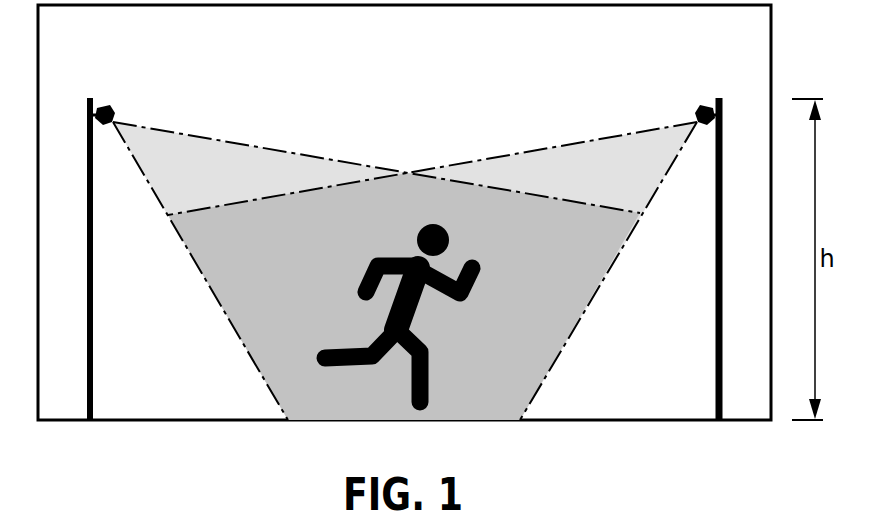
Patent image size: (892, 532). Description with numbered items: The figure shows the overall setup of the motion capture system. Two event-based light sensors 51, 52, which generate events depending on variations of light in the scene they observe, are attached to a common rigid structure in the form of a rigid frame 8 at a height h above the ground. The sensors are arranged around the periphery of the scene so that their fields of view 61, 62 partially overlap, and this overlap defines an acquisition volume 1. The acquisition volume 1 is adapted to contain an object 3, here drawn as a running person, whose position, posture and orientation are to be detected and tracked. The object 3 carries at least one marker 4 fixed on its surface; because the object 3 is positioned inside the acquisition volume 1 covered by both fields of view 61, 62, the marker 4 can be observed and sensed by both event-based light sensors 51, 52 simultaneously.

The acquisition volume 1 is at (516, 338).
The object 3 is at (425, 225).
The marker 4 is at (478, 272).
The rigid frame 8 is at (93, 357).
The event-based light sensor 51 is at (103, 110).
The event-based light sensor 52 is at (702, 108).
The field of view 61 is at (220, 152).
The field of view 62 is at (590, 153).